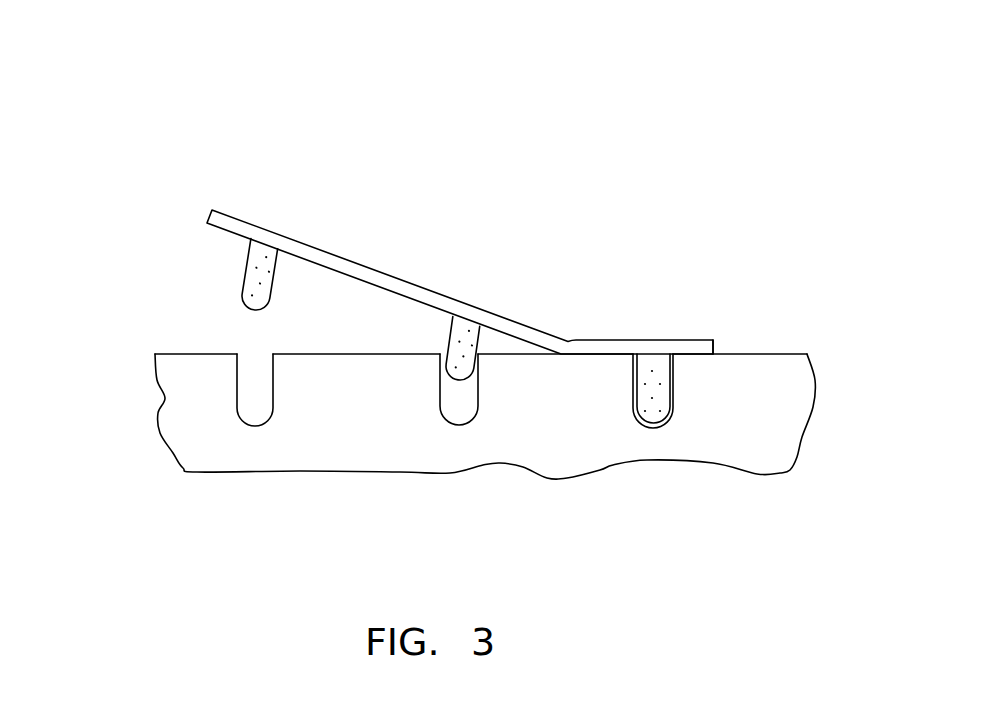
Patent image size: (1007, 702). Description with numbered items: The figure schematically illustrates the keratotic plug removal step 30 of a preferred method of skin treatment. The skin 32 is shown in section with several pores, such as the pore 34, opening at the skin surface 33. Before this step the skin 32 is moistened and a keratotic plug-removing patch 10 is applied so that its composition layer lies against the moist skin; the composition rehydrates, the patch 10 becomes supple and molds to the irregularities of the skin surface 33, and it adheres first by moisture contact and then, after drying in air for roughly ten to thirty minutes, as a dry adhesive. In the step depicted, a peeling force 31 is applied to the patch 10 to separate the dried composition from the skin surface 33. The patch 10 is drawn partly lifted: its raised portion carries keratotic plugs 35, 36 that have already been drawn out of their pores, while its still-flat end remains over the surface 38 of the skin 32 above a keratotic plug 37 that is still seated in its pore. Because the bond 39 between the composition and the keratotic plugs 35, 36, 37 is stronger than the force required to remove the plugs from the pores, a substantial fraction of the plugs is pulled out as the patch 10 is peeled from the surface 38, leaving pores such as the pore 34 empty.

The keratotic plug-removing patch 10 is at (254, 208).
The keratotic plug removal step 30 is at (779, 133).
The peeling force 31 is at (228, 215).
The skin 32 is at (251, 474).
The skin surface 33 is at (185, 341).
The pore 34 is at (247, 349).
The keratotic plug 35 is at (232, 245).
The keratotic plug 36 is at (437, 329).
The keratotic plug 37 is at (660, 352).
The surface of the skin 38 is at (710, 337).
The bond 39 is at (286, 235).